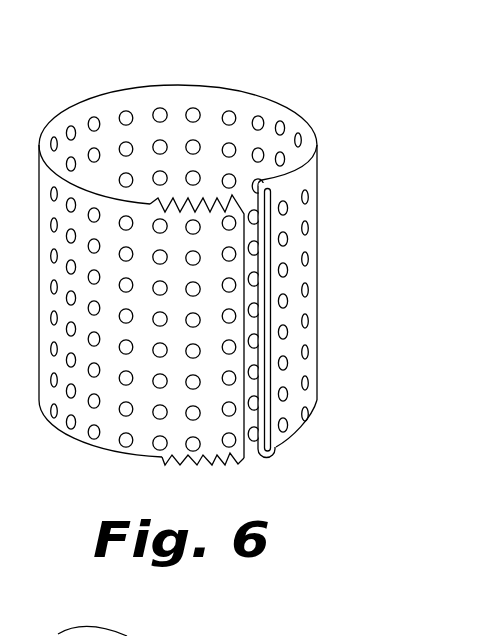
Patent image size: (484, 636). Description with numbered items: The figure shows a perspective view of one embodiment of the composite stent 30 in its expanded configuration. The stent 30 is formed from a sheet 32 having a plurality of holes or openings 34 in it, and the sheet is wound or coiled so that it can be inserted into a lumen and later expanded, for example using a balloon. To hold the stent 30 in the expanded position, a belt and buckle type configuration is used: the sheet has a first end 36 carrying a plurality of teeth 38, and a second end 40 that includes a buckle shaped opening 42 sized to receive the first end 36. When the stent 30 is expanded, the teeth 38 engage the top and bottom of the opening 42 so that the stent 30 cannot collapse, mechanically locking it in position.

The composite stent 30 is at (310, 80).
The sheet 32 is at (195, 94).
The holes or openings 34 is at (158, 115).
The first end 36 is at (233, 452).
The teeth 38 is at (200, 457).
The second end 40 is at (268, 449).
The buckle shaped opening 42 is at (275, 334).